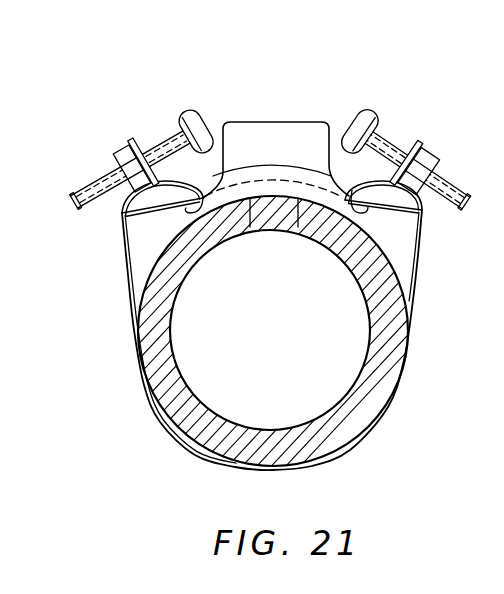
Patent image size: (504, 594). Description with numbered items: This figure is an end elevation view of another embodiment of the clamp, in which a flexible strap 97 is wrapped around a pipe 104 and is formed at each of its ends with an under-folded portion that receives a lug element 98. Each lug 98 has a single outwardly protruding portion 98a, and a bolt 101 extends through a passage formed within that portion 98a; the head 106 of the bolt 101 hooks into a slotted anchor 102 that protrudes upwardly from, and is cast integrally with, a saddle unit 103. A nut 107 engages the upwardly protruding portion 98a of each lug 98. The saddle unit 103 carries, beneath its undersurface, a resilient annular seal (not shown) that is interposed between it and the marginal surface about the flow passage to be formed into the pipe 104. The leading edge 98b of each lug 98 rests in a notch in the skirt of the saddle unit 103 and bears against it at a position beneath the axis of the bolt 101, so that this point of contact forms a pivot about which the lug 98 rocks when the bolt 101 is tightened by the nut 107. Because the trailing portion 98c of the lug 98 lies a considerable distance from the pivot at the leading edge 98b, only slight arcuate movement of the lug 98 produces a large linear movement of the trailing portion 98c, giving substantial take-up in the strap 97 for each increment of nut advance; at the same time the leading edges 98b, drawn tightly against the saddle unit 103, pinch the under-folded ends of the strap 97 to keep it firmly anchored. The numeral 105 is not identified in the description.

The flexible strap 97 is at (122, 252).
The lug element 98 is at (385, 193).
The outwardly protruding portion 98a is at (436, 98).
The leading edge 98b is at (347, 198).
The trailing portion 98c is at (368, 334).
The bolt 101 is at (448, 208).
The slotted anchor 102 is at (136, 141).
The saddle unit 103 is at (277, 147).
The pipe 104 is at (146, 279).
The element 105 is at (496, 129).
The bolt head 106 is at (200, 122).
The nut 107 is at (112, 157).